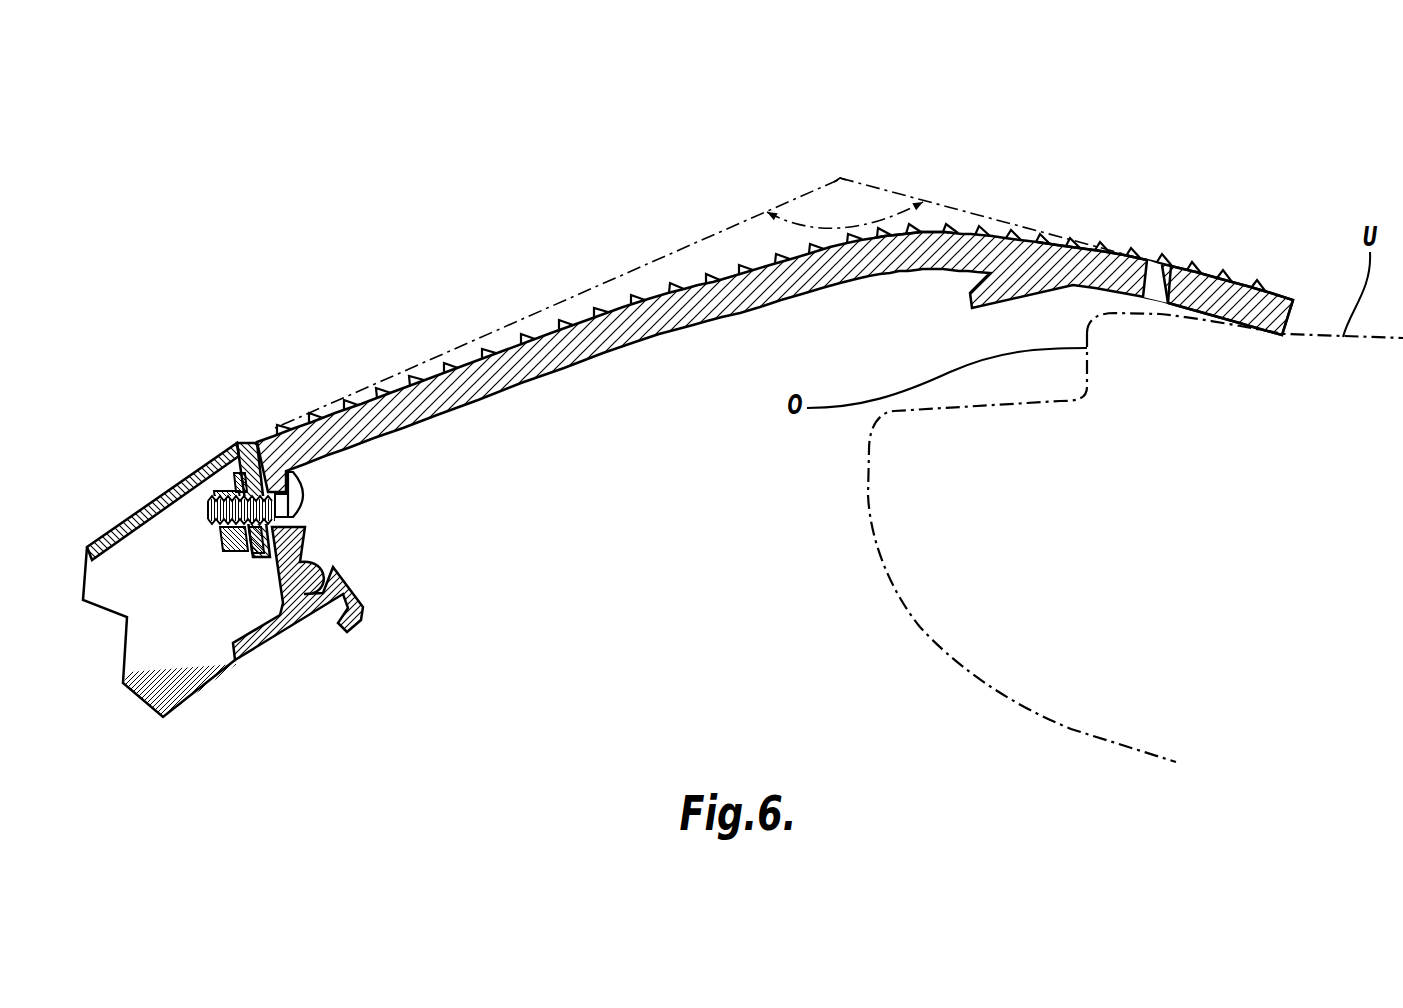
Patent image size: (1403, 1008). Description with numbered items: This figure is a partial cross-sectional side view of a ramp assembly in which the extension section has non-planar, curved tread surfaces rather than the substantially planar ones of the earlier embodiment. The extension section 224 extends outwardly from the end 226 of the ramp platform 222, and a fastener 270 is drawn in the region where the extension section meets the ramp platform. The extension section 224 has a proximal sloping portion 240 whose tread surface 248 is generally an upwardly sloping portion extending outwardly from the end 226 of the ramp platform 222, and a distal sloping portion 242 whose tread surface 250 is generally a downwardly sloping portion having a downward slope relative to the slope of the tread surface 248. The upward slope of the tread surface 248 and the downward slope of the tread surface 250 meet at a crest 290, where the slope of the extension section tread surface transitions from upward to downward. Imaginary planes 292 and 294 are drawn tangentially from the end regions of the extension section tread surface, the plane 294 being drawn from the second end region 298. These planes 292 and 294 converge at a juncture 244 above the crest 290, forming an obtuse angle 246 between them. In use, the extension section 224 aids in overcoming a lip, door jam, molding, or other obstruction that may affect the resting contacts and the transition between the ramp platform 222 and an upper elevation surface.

The ramp platform 222 is at (190, 480).
The extension section 224 is at (775, 312).
The end of the ramp platform 226 is at (283, 630).
The proximal sloping portion 240 is at (653, 308).
The distal sloping portion 242 is at (1137, 268).
The juncture 244 is at (840, 178).
The obtuse angle 246 is at (838, 228).
The tread surface of the proximal sloping portion 248 is at (547, 323).
The tread surface of the distal sloping portion 250 is at (1077, 250).
The fastener 270 is at (305, 497).
The crest 290 is at (915, 230).
The imaginary plane 292 is at (717, 232).
The imaginary plane 294 is at (1027, 228).
The second end region of the tread surface 298 is at (1230, 277).